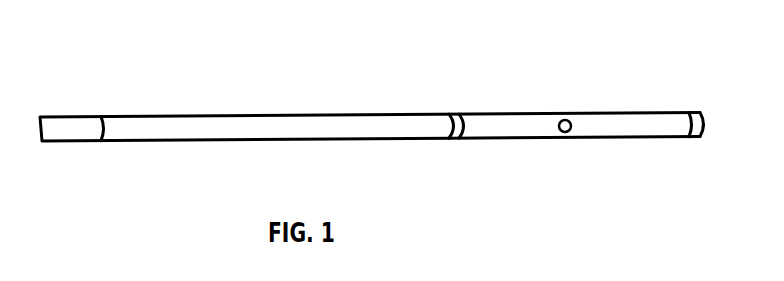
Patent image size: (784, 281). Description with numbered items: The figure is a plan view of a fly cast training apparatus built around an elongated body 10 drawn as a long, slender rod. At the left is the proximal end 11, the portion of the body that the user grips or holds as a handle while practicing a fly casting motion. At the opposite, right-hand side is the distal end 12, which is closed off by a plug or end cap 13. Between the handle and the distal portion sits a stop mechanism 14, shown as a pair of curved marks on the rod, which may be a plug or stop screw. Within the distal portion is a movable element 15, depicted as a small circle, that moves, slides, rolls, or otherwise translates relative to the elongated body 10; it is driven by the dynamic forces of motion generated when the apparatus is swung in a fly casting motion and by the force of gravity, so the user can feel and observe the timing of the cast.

The elongated body 10 is at (185, 150).
The proximal end 11 is at (60, 152).
The distal end 12 is at (612, 145).
The end cap 13 is at (707, 113).
The stop mechanism 14 is at (457, 107).
The movable element 15 is at (568, 105).